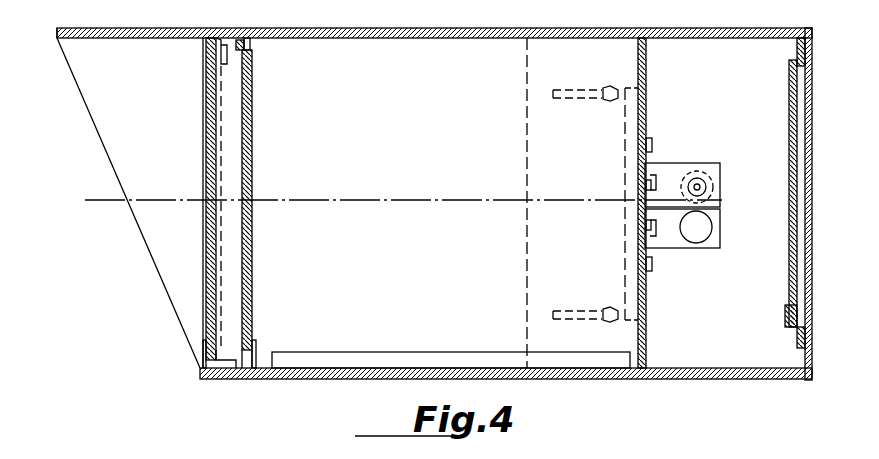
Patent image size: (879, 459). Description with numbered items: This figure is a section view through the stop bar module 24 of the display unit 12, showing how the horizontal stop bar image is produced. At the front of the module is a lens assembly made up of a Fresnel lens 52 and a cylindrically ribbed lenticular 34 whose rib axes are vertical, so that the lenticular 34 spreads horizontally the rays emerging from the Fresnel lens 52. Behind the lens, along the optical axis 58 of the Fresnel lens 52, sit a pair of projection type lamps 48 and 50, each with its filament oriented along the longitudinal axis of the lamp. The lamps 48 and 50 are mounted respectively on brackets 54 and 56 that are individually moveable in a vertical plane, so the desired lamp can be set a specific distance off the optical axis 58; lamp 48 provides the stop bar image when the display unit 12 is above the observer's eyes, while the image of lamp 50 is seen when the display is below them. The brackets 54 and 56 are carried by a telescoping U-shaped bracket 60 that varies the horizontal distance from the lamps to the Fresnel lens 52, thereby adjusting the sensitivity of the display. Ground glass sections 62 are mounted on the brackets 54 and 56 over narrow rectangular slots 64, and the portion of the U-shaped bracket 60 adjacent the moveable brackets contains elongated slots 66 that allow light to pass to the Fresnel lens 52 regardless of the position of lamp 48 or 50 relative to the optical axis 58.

The display unit 12 is at (95, 290).
The stop bar module 24 is at (367, 290).
The lenticular 34 is at (205, 118).
The lamp 48 is at (706, 187).
The lamp 50 is at (708, 230).
The Fresnel lens 52 is at (252, 108).
The bracket 54 is at (705, 165).
The bracket 56 is at (710, 248).
The optical axis 58 is at (318, 200).
The telescoping U-shaped bracket 60 is at (527, 108).
The ground glass section 62 is at (660, 180).
The narrow rectangular slot 64 is at (646, 185).
The elongated slot 66 is at (645, 145).